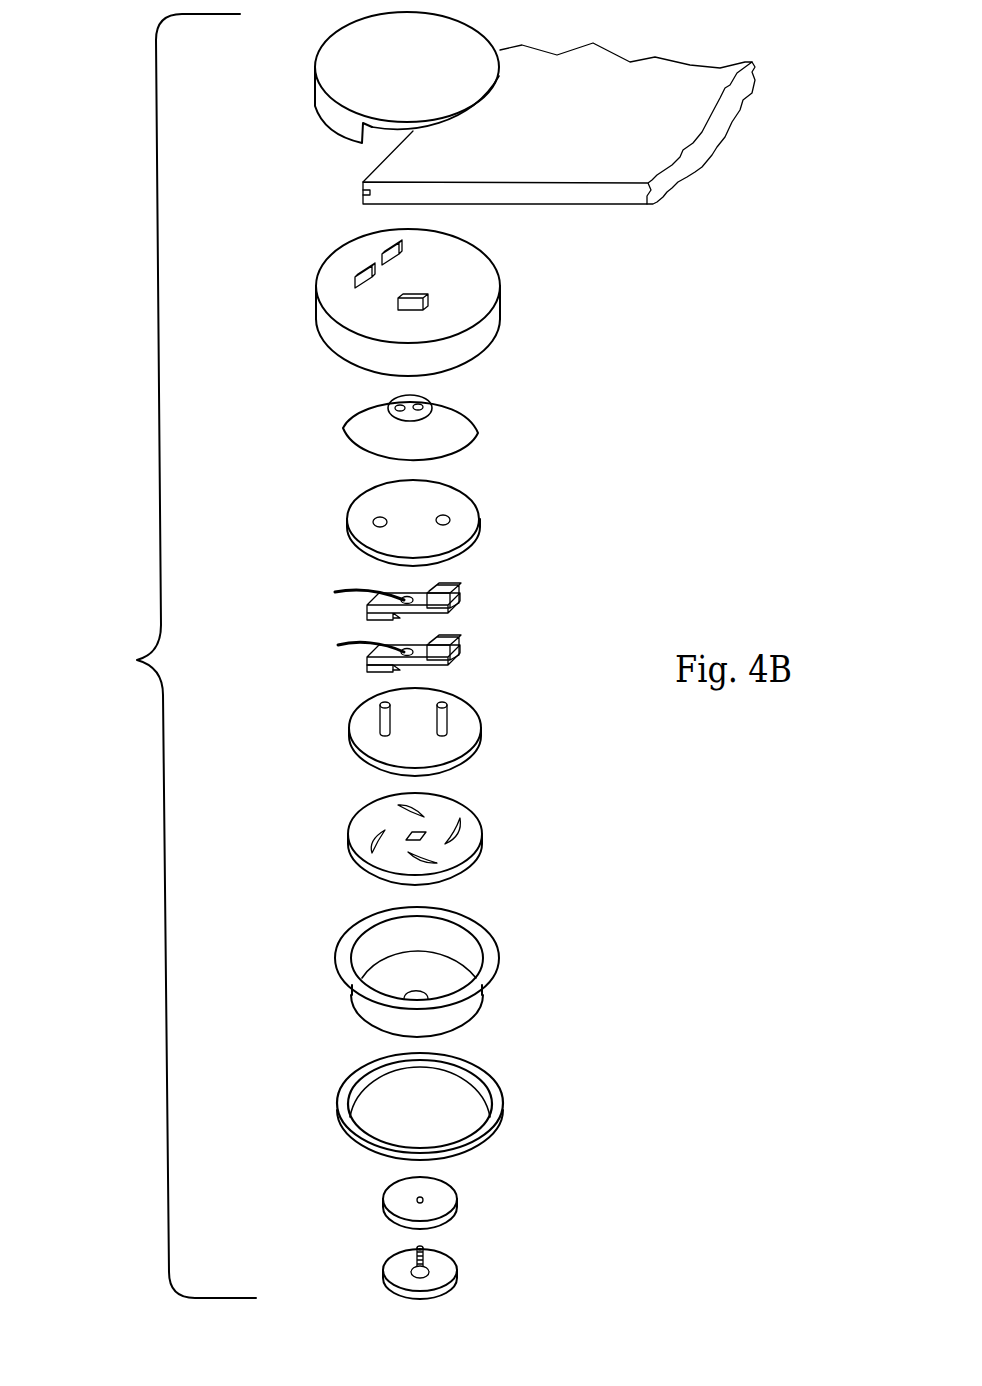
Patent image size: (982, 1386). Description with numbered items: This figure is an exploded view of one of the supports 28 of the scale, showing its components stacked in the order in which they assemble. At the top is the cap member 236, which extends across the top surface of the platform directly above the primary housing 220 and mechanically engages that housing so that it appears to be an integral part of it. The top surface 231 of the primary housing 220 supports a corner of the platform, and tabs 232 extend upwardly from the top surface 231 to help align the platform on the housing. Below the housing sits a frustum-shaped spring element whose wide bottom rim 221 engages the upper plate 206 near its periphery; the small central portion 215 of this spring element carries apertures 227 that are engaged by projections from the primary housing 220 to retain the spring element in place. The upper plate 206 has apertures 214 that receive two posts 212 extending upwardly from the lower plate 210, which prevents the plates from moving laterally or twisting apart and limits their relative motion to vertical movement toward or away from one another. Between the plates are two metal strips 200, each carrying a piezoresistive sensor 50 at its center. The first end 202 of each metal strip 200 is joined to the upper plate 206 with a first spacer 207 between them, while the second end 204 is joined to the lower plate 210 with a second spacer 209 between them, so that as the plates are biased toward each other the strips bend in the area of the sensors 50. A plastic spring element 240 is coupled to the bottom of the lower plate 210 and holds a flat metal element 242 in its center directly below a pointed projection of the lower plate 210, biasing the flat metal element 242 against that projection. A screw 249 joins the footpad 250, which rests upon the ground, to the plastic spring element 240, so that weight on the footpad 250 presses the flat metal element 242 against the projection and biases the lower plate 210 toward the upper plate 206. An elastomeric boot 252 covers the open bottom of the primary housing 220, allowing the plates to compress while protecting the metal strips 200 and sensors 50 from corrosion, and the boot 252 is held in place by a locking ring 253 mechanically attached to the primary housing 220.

The support 28 is at (137, 660).
The cap member 236 is at (315, 64).
The tabs 232 is at (357, 275).
The top surface 231 is at (482, 273).
The primary housing 220 is at (461, 290).
The button 215 is at (448, 373).
The apertures 227 is at (397, 413).
The bottom rim 221 is at (448, 386).
The upper plate 206 is at (426, 503).
The apertures 214 is at (380, 522).
The first spacer 207 is at (437, 587).
The first end 202 is at (455, 590).
The metal strips 200 is at (437, 569).
The piezoresistive sensors 50 is at (402, 640).
The second end 204 is at (406, 656).
The second spacer 209 is at (373, 673).
The posts 212 is at (447, 722).
The lower plate 210 is at (480, 717).
The flat metal element 242 is at (423, 828).
The plastic spring element 240 is at (498, 833).
The elastomeric boot 252 is at (475, 1000).
The locking ring 253 is at (503, 1088).
The footpad 250 is at (453, 1192).
The screw 249 is at (433, 1247).